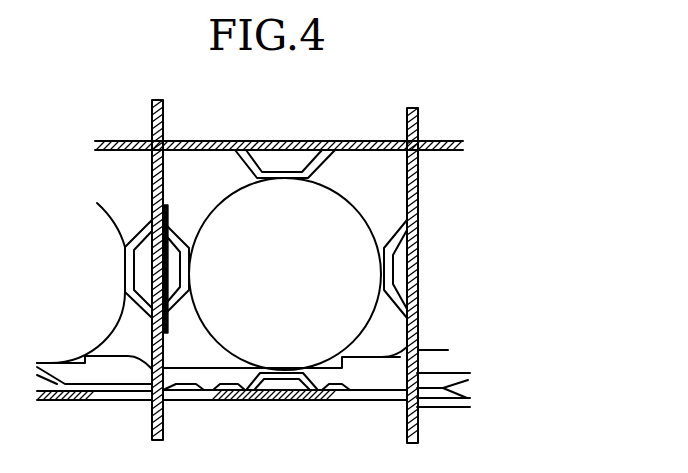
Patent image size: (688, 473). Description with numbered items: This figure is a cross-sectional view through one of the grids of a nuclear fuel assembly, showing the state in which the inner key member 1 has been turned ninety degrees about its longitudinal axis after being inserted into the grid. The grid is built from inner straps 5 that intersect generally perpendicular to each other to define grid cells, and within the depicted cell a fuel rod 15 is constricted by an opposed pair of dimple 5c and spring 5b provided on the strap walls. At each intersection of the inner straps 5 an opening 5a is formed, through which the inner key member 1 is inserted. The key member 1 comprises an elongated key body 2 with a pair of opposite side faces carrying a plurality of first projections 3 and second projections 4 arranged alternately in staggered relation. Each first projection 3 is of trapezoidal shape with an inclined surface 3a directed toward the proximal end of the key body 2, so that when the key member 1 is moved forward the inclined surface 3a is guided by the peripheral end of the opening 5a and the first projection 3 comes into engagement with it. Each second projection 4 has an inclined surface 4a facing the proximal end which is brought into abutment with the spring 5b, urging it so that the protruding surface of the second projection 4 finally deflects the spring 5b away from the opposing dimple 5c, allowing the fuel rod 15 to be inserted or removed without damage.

The inner key member 1 is at (122, 340).
The key body 2 is at (173, 373).
The first projection 3 is at (375, 357).
The inclined surface 3a is at (418, 350).
The second projection 4 is at (212, 385).
The inclined surface 4a is at (218, 393).
The inner strap 5 is at (162, 188).
The opening 5a is at (154, 130).
The spring 5b is at (189, 272).
The dimple 5c is at (275, 170).
The fuel rod 15 is at (345, 198).